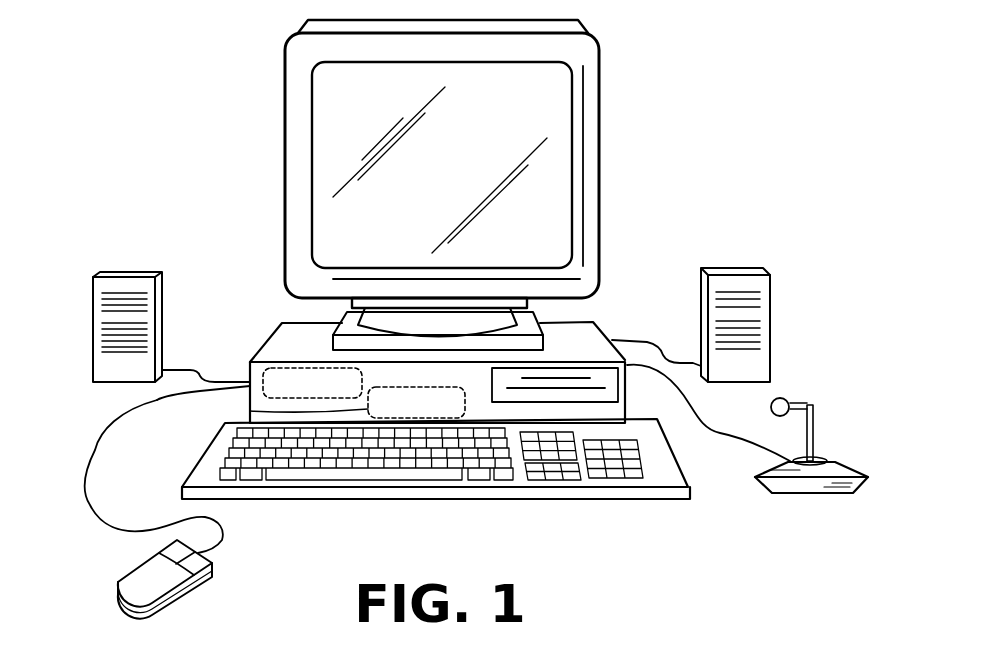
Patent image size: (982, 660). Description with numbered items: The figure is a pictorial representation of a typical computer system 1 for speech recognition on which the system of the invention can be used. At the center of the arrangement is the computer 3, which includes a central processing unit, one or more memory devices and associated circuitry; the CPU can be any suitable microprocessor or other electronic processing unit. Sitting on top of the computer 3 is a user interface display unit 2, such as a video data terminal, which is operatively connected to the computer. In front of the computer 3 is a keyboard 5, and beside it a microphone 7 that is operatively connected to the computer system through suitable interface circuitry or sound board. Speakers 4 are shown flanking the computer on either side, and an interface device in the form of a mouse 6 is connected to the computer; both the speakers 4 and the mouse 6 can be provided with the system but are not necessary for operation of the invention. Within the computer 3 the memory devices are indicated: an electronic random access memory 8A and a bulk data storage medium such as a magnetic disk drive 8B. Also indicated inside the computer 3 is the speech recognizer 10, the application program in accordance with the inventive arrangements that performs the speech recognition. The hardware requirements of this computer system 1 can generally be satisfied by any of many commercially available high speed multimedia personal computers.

The computer system 1 is at (216, 160).
The user interface display unit 2 is at (602, 60).
The computer 3 is at (600, 333).
The speakers 4 is at (122, 270).
The keyboard 5 is at (520, 500).
The mouse 6 is at (212, 563).
The microphone 7 is at (790, 495).
The electronic random access memory 8A is at (250, 380).
The magnetic disk drive 8B is at (250, 409).
The speech recognizer 10 is at (300, 396).